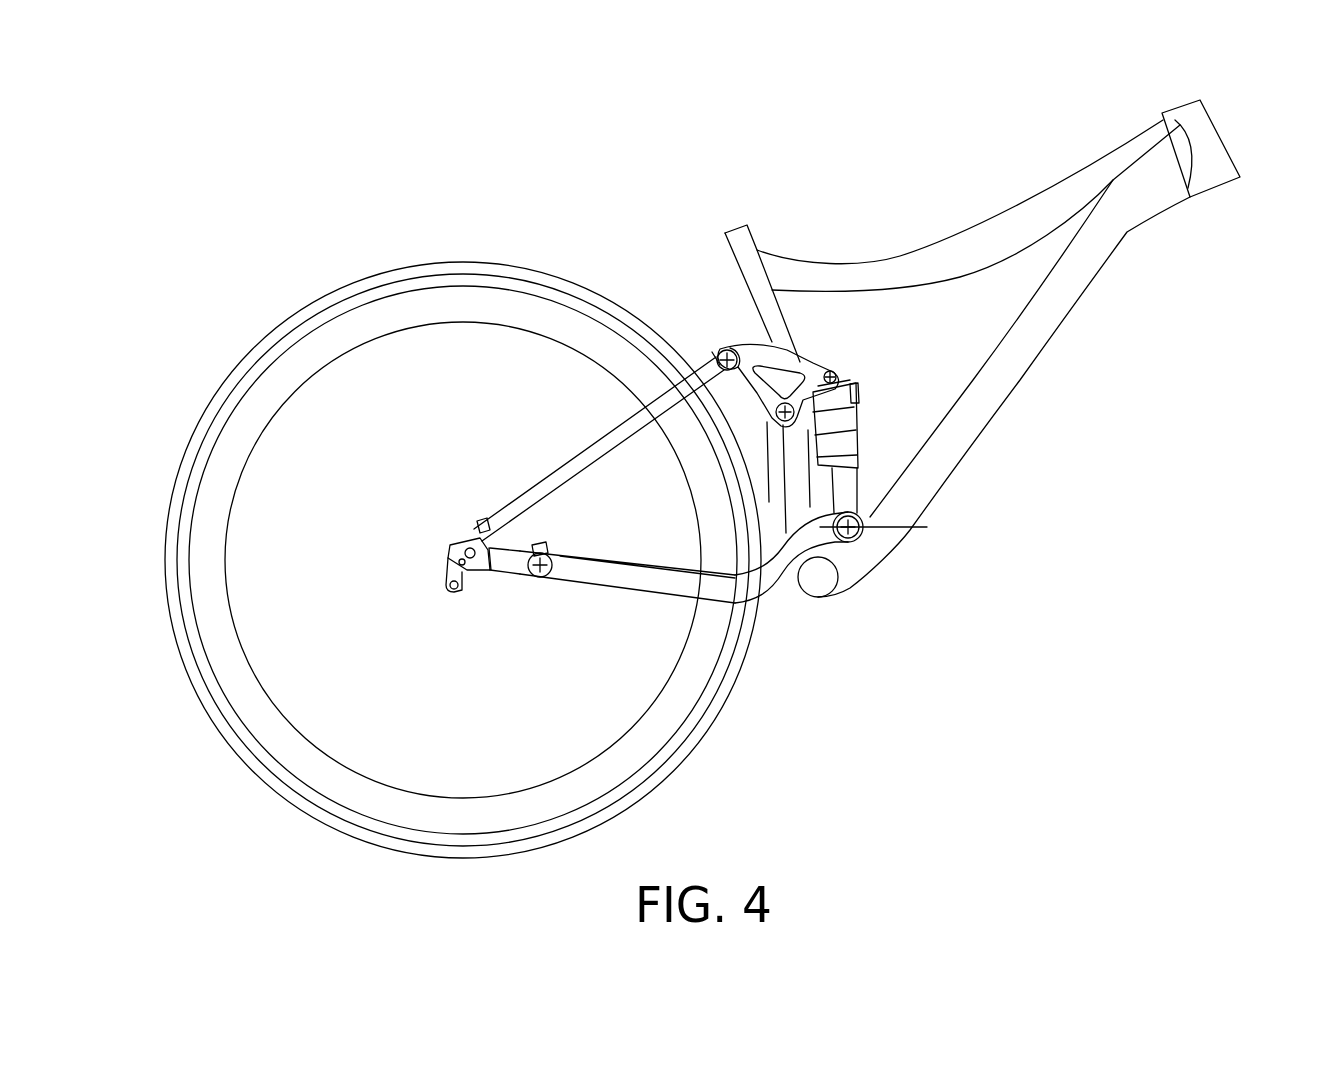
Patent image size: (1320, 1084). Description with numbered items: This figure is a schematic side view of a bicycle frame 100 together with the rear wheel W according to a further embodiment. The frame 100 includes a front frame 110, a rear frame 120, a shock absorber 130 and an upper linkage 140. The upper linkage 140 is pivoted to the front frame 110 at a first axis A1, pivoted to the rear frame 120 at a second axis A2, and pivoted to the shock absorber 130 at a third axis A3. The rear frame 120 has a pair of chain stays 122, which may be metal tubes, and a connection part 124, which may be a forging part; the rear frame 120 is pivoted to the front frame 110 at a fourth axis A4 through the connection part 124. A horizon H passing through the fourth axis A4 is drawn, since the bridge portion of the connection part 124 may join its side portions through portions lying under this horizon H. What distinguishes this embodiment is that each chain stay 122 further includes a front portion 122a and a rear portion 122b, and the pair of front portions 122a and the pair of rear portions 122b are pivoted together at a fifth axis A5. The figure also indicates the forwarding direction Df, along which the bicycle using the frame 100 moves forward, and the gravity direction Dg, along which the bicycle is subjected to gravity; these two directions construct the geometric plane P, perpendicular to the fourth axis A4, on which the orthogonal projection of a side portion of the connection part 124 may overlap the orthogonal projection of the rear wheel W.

The frame 100 is at (702, 463).
The front frame 110 is at (1080, 126).
The rear frame 120 is at (570, 438).
The chain stays 122 is at (606, 629).
The front portion 122a is at (574, 570).
The rear portion 122b is at (512, 567).
The connection part 124 is at (806, 603).
The shock absorber 130 is at (840, 447).
The upper linkage 140 is at (794, 358).
The rear wheel W is at (474, 268).
The first axis A1 is at (777, 423).
The second axis A2 is at (722, 350).
The third axis A3 is at (838, 373).
The fourth axis A4 is at (855, 535).
The fifth axis A5 is at (541, 556).
The horizon H is at (897, 532).
The forwarding direction Df is at (305, 112).
The gravity direction Dg is at (305, 112).
The geometric plane P is at (359, 172).